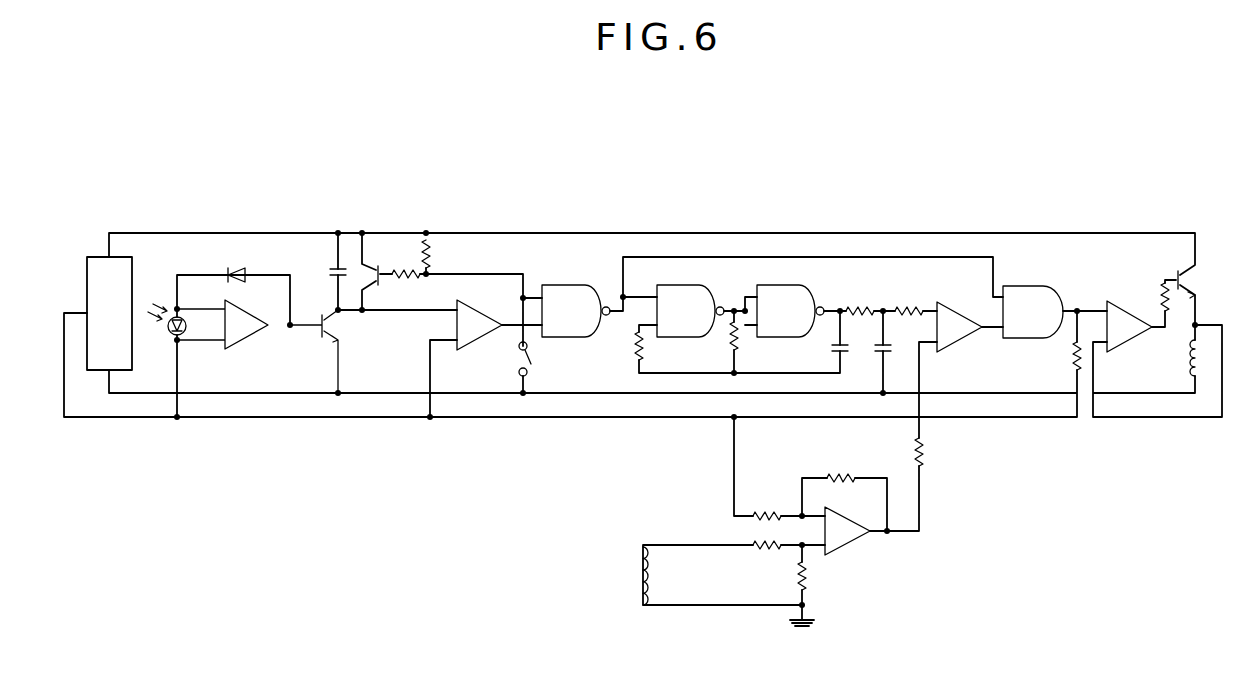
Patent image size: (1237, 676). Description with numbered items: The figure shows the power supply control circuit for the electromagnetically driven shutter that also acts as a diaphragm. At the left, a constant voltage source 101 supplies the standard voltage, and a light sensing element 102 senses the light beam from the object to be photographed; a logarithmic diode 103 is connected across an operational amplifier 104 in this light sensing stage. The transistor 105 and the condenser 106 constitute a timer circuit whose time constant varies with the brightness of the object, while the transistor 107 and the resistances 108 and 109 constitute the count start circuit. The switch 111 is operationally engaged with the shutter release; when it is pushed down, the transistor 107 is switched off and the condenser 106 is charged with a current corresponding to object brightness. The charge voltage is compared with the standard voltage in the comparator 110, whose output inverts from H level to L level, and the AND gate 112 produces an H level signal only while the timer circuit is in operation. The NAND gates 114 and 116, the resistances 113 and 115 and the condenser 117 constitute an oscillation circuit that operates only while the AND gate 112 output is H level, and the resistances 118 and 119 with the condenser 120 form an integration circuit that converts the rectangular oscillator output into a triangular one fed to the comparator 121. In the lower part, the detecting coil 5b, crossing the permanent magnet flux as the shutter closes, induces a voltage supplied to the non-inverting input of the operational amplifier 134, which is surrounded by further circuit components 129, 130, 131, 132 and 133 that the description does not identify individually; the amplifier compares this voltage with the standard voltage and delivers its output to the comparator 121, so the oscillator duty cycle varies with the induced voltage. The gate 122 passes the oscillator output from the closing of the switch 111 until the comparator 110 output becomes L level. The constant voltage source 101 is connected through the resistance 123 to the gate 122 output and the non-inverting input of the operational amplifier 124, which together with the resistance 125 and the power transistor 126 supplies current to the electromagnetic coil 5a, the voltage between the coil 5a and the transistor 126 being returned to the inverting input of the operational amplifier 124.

The constant voltage source 101 is at (109, 313).
The light sensing element 102 is at (174, 316).
The logarithmic diode 103 is at (237, 268).
The operational amplifier 104 is at (253, 338).
The transistor 105 is at (330, 336).
The condenser 106 is at (330, 272).
The transistor 107 is at (374, 270).
The resistance 108 is at (402, 279).
The resistance 109 is at (432, 255).
The comparator 110 is at (476, 312).
The switch 111 is at (531, 356).
The AND gate 112 is at (576, 311).
The resistance 113 is at (635, 345).
The NAND gate 114 is at (690, 311).
The resistance 115 is at (730, 340).
The NAND gate 116 is at (790, 311).
The condenser 117 is at (834, 350).
The resistance 118 is at (860, 306).
The resistance 119 is at (907, 306).
The condenser 120 is at (880, 352).
The comparator 121 is at (955, 340).
The AND gate 122 is at (1033, 312).
The resistance 123 is at (1072, 358).
The operational amplifier 124 is at (1125, 344).
The resistance 125 is at (1162, 298).
The transistor 126 is at (1178, 271).
The electromagnetic coil 5a is at (1188, 360).
The resistor 129 is at (765, 512).
The resistor 130 is at (843, 475).
The resistor 131 is at (924, 452).
The resistor 132 is at (765, 549).
The resistor 133 is at (806, 580).
The operational amplifier 134 is at (850, 544).
The detecting coil 5b is at (640, 575).